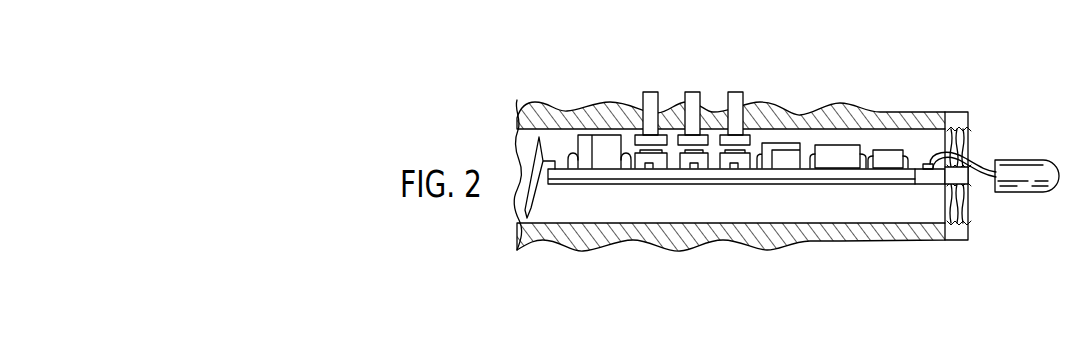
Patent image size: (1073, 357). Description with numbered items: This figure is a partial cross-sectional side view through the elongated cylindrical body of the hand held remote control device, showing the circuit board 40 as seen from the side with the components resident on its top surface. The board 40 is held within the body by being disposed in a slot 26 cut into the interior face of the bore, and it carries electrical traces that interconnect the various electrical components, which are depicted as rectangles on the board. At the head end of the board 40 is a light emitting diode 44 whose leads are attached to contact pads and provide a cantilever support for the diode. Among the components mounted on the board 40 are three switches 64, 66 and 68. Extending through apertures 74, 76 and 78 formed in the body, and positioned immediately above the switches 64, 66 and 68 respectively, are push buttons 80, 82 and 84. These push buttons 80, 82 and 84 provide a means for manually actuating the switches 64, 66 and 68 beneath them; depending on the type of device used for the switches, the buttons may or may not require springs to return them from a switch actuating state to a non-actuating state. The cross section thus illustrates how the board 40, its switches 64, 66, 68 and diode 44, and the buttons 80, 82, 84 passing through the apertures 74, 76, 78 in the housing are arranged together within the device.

The slot 26 is at (975, 187).
The circuit board 40 is at (800, 169).
The light emitting diode 44 is at (1033, 162).
The switch 64 is at (637, 169).
The switch 66 is at (680, 169).
The switch 68 is at (725, 169).
The aperture 74 is at (632, 107).
The aperture 76 is at (675, 108).
The aperture 78 is at (713, 108).
The push button 80 is at (648, 92).
The push button 82 is at (692, 92).
The push button 84 is at (735, 92).